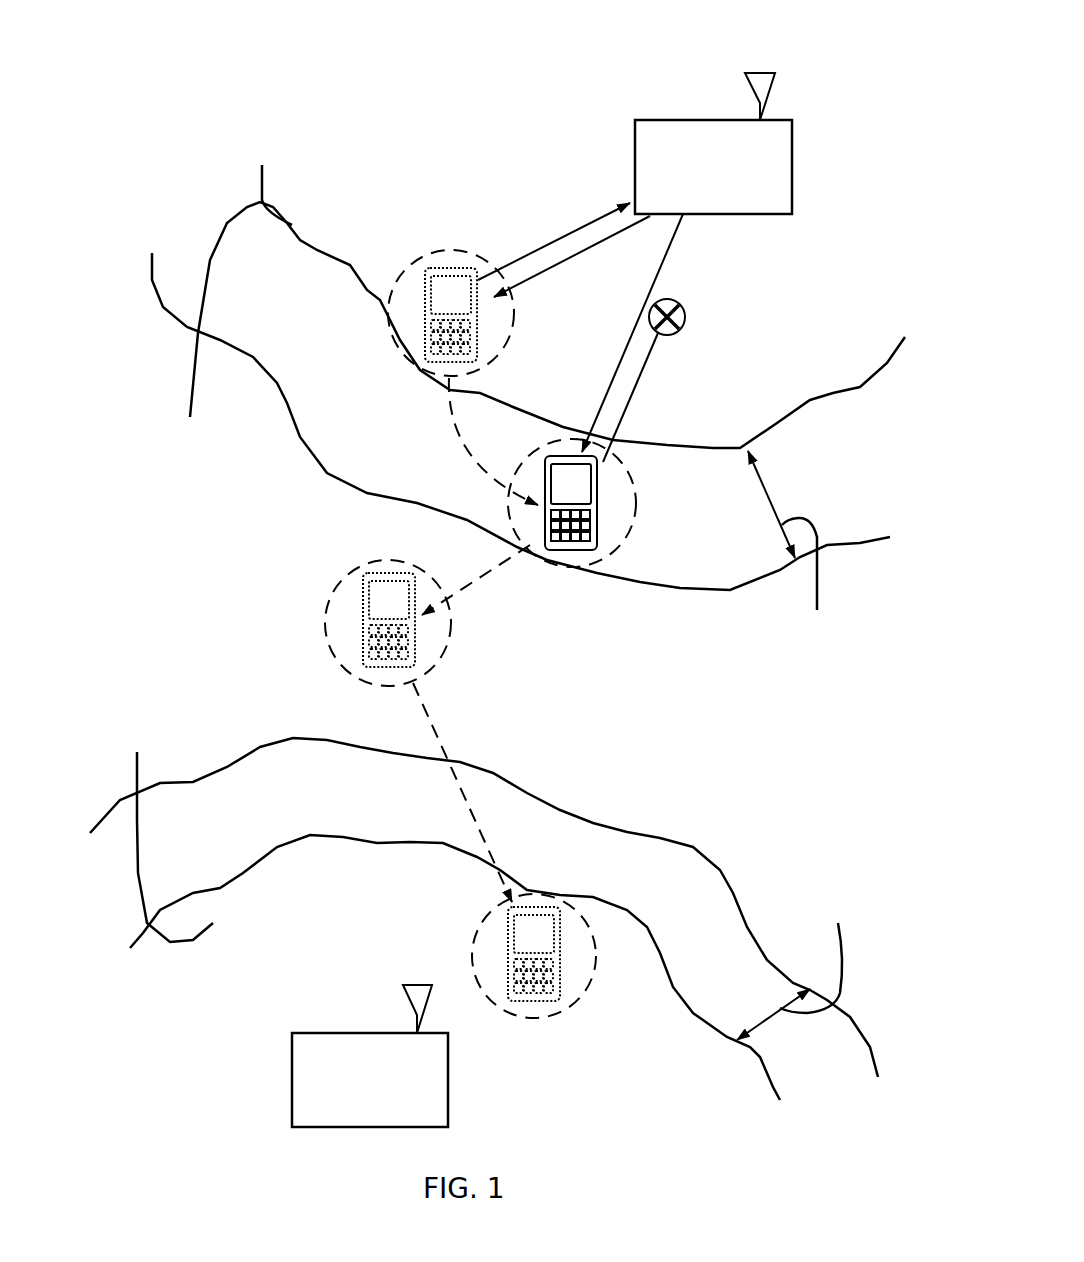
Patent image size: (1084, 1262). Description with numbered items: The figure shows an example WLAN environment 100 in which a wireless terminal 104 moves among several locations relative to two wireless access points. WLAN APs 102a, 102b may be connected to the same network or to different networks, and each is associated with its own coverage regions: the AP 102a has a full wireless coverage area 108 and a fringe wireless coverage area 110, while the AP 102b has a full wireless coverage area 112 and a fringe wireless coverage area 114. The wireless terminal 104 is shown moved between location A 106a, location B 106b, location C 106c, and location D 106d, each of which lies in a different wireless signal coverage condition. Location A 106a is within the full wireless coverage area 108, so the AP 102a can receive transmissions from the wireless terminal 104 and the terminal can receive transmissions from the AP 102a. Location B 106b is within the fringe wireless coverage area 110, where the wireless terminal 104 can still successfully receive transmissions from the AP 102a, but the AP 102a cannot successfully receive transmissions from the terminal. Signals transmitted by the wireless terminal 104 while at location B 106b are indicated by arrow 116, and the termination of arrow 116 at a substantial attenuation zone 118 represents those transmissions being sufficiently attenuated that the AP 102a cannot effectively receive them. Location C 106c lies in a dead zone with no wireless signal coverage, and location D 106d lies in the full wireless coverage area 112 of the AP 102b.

The WLAN environment 100 is at (198, 88).
The WLAN AP 102a is at (655, 118).
The WLAN AP 102b is at (310, 1031).
The wireless terminal 104 is at (478, 326).
The location A 106a is at (446, 252).
The location B 106b is at (590, 570).
The location C 106c is at (323, 625).
The location D 106d is at (583, 991).
The full wireless coverage area 108 is at (512, 377).
The fringe wireless coverage area 110 is at (807, 568).
The full wireless coverage area 112 is at (484, 883).
The fringe wireless coverage area 114 is at (804, 932).
The arrow 116 is at (629, 406).
The substantial attenuation zone 118 is at (686, 322).